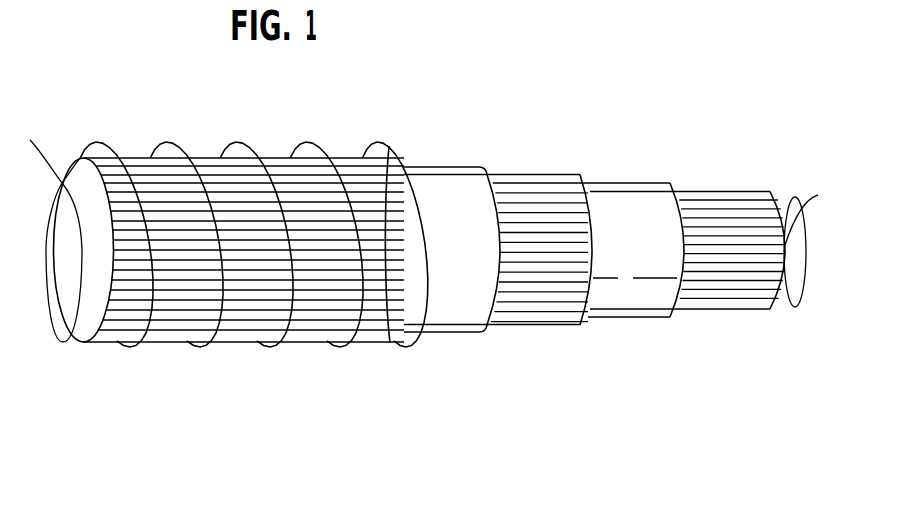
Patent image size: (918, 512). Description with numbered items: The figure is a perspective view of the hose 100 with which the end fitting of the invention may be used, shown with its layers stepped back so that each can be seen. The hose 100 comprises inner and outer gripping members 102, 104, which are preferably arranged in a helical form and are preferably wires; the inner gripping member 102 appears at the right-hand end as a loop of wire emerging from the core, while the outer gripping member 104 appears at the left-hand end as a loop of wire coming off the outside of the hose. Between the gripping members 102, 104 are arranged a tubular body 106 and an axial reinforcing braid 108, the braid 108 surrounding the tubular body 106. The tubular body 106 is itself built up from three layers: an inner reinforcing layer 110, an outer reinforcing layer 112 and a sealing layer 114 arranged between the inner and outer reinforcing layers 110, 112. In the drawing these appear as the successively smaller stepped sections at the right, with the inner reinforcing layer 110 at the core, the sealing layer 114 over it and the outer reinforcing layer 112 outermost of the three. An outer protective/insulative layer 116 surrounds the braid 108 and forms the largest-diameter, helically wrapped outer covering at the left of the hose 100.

The hose 100 is at (424, 265).
The inner gripping member 102 is at (797, 307).
The outer gripping member 104 is at (53, 160).
The tubular body 106 is at (635, 257).
The axial reinforcing braid 108 is at (439, 166).
The inner reinforcing layer 110 is at (766, 192).
The outer reinforcing layer 112 is at (558, 175).
The sealing layer 114 is at (638, 183).
The outer protective/insulative layer 116 is at (344, 157).